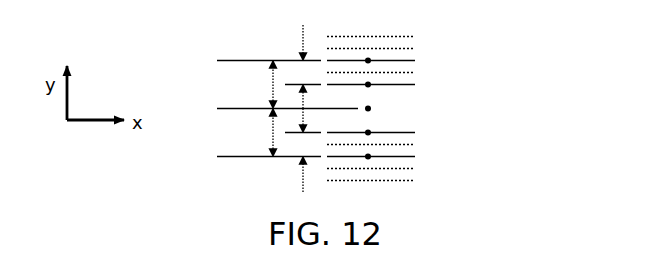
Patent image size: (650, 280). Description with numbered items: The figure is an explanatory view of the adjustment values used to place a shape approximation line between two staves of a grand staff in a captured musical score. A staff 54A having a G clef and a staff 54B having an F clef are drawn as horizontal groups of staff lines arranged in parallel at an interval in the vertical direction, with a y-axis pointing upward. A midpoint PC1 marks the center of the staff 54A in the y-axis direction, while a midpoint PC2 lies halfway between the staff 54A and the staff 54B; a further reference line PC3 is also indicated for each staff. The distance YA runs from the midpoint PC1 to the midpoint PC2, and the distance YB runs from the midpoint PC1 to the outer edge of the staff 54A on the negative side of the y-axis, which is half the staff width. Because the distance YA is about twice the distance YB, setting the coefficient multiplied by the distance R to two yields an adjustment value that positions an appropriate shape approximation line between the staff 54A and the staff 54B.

The staff 54A is at (503, 31).
The staff 54B is at (500, 130).
The midpoint of staff PC1 is at (249, 109).
The midpoint between staves PC2 is at (274, 109).
The third pixel center line PC3 is at (423, 84).
The distance YA is at (255, 109).
The distance YB is at (286, 111).